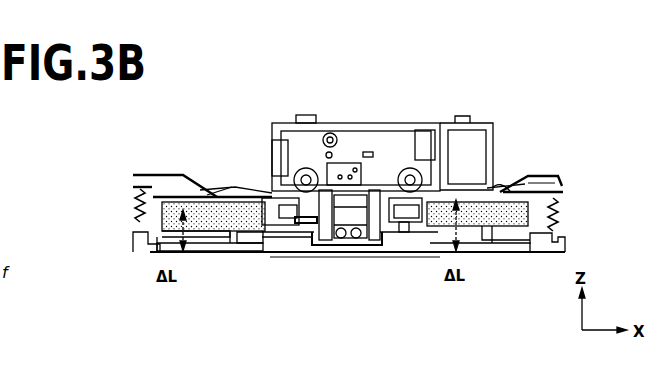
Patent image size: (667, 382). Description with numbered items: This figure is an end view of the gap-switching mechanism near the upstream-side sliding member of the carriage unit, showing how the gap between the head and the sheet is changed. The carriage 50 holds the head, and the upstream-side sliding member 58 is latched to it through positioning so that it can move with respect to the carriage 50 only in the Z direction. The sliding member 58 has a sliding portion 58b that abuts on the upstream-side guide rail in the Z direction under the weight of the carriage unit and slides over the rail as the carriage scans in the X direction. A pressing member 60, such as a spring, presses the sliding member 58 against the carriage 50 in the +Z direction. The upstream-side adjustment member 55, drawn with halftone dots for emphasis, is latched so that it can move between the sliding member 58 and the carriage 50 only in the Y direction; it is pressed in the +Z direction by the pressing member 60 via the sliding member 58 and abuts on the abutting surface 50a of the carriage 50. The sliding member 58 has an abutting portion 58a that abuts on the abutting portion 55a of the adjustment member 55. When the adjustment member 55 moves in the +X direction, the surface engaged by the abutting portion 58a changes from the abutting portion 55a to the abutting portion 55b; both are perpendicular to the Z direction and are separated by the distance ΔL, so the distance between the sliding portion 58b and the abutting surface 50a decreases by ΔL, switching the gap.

The carriage 50 is at (172, 175).
The abutting surface 50a is at (213, 192).
The upstream-side adjustment member 55 is at (221, 218).
The abutting portion 55a is at (240, 252).
The abutting portion 55b is at (166, 236).
The upstream-side sliding member 58 is at (316, 252).
The abutting portion 58a is at (208, 236).
The sliding portion 58b is at (218, 238).
The pressing member 60 is at (140, 198).